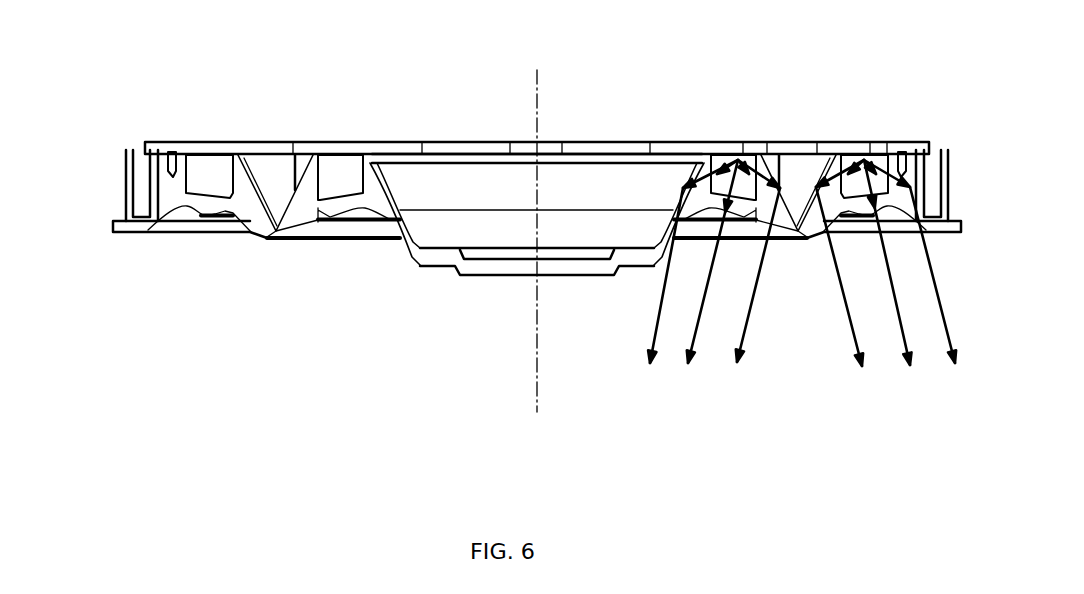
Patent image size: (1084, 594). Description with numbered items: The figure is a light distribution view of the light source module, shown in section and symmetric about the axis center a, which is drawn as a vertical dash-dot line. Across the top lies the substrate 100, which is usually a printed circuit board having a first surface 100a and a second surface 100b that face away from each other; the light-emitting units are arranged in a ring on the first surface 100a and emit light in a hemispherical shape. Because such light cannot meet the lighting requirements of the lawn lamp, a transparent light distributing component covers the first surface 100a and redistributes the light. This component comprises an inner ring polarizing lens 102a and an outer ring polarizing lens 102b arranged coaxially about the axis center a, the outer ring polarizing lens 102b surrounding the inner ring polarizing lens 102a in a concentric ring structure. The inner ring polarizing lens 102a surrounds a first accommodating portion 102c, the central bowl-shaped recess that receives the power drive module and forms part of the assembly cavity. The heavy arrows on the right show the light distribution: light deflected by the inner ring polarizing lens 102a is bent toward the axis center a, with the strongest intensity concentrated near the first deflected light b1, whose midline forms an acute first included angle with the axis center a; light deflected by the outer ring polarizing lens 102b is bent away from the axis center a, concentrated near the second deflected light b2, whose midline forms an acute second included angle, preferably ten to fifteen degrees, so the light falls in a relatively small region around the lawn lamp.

The substrate 100 is at (710, 140).
The first surface 100a is at (209, 158).
The second surface 100b is at (267, 140).
The inner ring polarizing lens 102a is at (371, 198).
The outer ring polarizing lens 102b is at (243, 207).
The first accommodating portion 102c is at (482, 233).
The axis center a is at (538, 254).
The midline of the illumination range (first deflected light) b1 is at (714, 279).
The midline of the illumination range (second deflected light) b2 is at (886, 282).